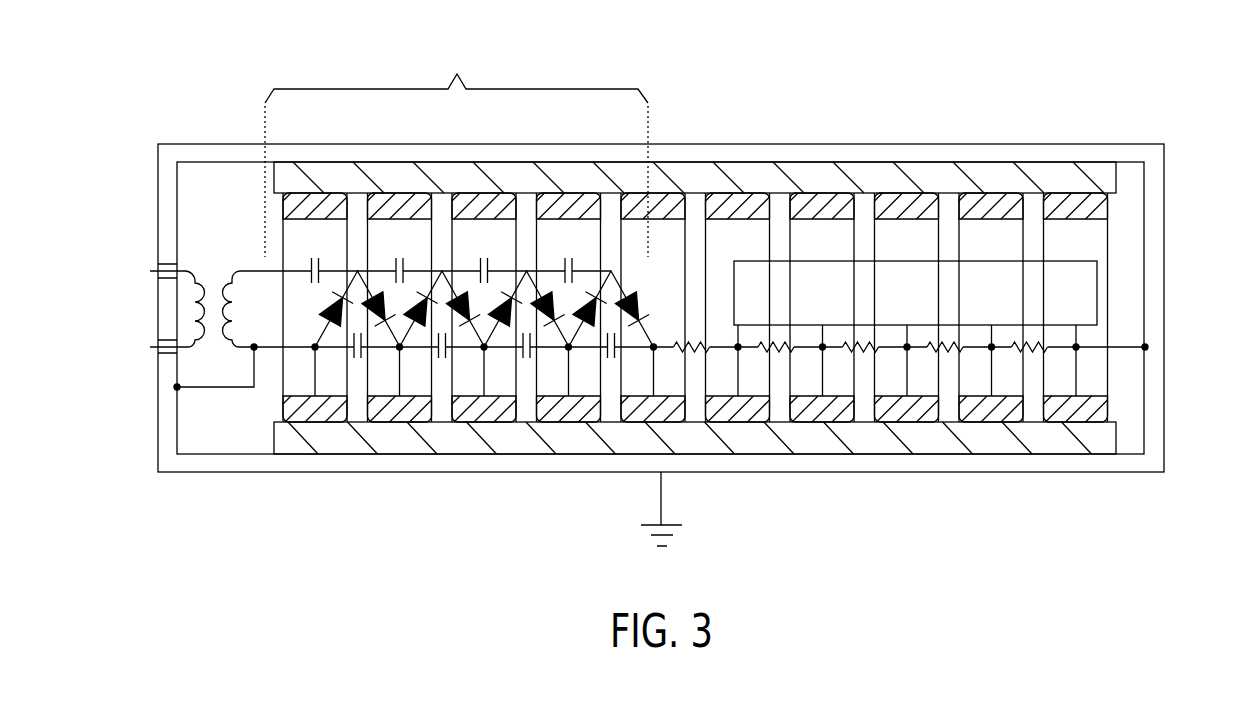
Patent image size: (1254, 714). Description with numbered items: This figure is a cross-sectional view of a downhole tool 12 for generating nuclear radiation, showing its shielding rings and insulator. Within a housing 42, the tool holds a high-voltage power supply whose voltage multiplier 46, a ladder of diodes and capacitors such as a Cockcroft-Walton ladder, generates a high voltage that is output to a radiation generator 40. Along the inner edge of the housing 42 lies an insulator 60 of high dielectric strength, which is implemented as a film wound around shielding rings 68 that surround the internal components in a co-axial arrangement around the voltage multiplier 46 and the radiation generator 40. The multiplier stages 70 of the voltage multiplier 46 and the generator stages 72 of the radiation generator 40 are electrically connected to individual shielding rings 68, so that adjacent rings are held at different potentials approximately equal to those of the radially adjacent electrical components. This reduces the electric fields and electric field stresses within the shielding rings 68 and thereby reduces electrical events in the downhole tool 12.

The downhole tool 12 is at (214, 115).
The radiation generator 40 is at (1097, 293).
The housing 42 is at (875, 155).
The voltage multiplier 46 is at (447, 291).
The insulator 60 is at (818, 177).
The shielding rings 68 is at (406, 202).
The multiplier stages 70 is at (507, 303).
The generator stages 72 is at (991, 350).